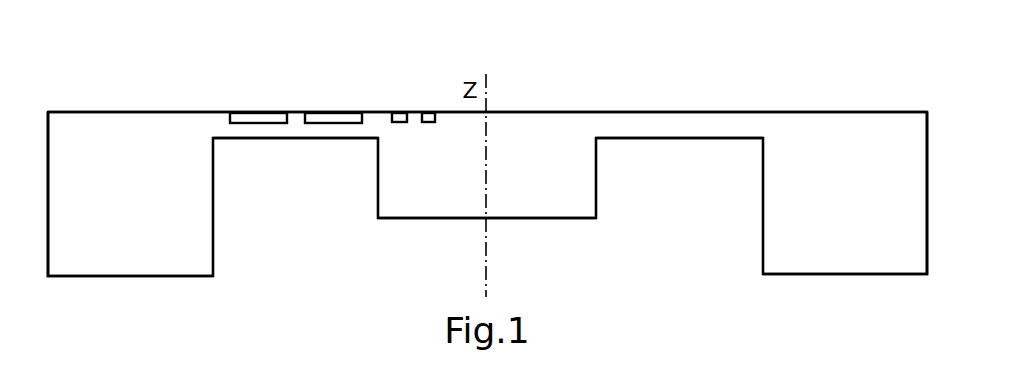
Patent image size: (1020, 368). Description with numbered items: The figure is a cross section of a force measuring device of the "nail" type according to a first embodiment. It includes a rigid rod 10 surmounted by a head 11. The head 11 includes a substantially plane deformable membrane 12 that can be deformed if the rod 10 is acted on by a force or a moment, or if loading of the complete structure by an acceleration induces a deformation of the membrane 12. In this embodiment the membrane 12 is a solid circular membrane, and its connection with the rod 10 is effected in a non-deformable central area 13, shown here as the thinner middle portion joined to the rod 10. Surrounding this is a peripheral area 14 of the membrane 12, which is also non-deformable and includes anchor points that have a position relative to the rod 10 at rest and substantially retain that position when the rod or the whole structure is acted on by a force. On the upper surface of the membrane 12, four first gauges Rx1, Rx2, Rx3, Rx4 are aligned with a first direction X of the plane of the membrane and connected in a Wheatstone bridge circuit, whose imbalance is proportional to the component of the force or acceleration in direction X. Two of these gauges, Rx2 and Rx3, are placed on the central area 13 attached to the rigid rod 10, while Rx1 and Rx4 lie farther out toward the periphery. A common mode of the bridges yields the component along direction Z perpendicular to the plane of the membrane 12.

The rigid rod 10 is at (422, 200).
The head 11 is at (512, 91).
The deformable membrane 12 is at (293, 132).
The central area 13 is at (546, 140).
The peripheral area 14 is at (88, 130).
The first gauge Rx1 is at (258, 118).
The first gauge Rx2 is at (428, 112).
The first gauge Rx3 is at (400, 112).
The first gauge Rx4 is at (328, 118).